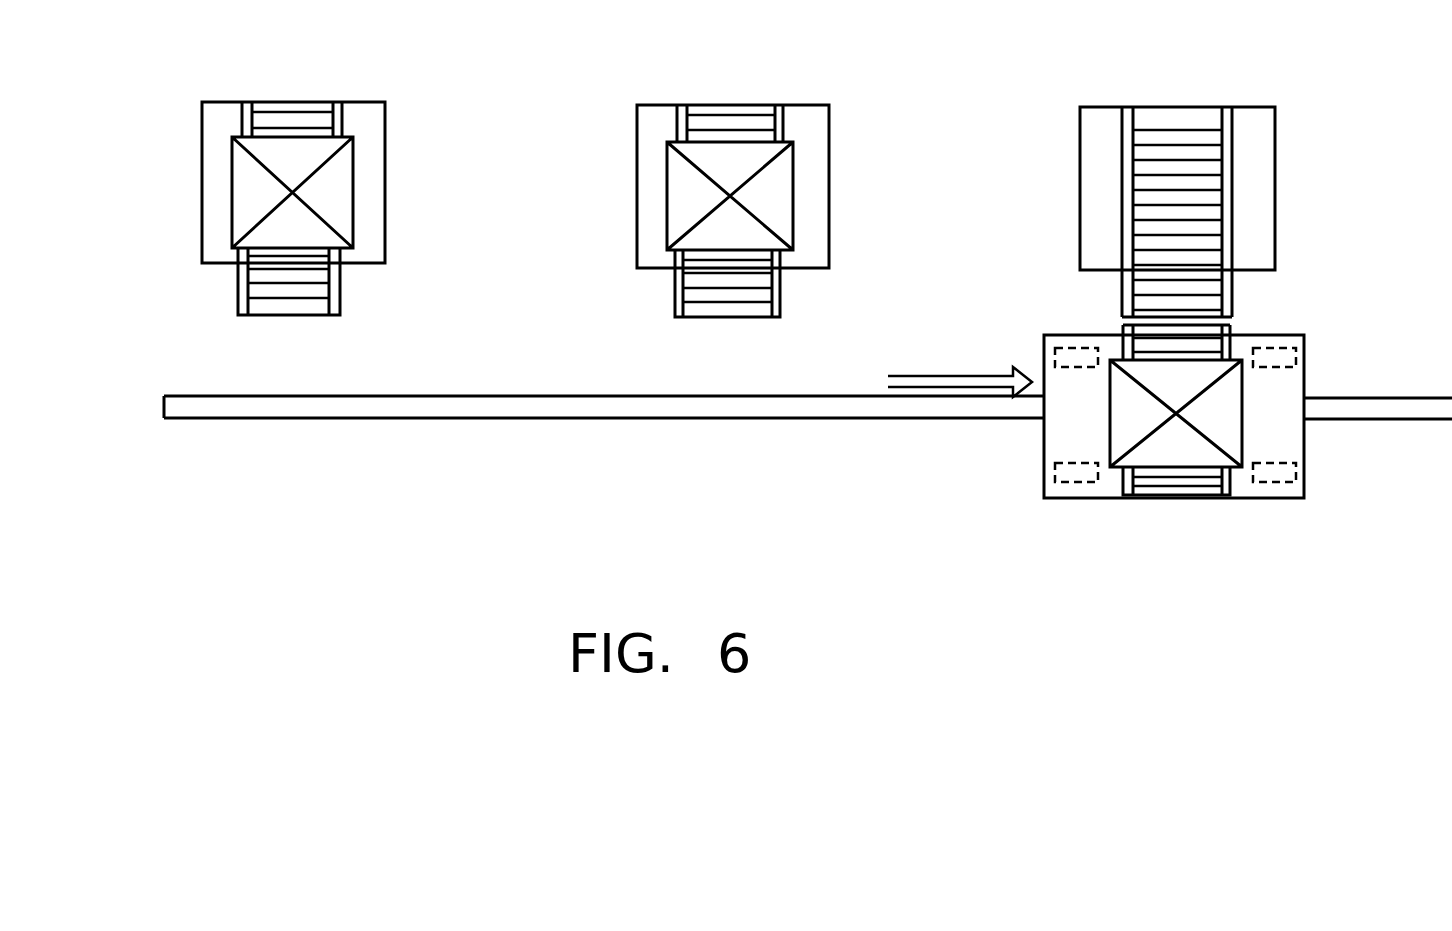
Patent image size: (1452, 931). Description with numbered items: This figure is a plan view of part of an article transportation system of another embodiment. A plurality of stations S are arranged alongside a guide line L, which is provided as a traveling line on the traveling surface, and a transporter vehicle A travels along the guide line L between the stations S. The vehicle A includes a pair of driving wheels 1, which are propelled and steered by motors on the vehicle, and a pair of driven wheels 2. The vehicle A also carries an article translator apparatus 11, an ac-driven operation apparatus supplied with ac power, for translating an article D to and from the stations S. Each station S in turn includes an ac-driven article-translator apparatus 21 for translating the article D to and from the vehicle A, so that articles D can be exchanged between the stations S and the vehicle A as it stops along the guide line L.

The ac-driven article-translator apparatus 21 is at (344, 128).
The station S is at (385, 165).
The article D is at (353, 222).
The driving wheel 1 is at (1077, 350).
The driven wheel 2 is at (1275, 352).
The transporter vehicle A is at (1304, 461).
The article translator apparatus 11 is at (1180, 501).
The guide line L is at (546, 420).